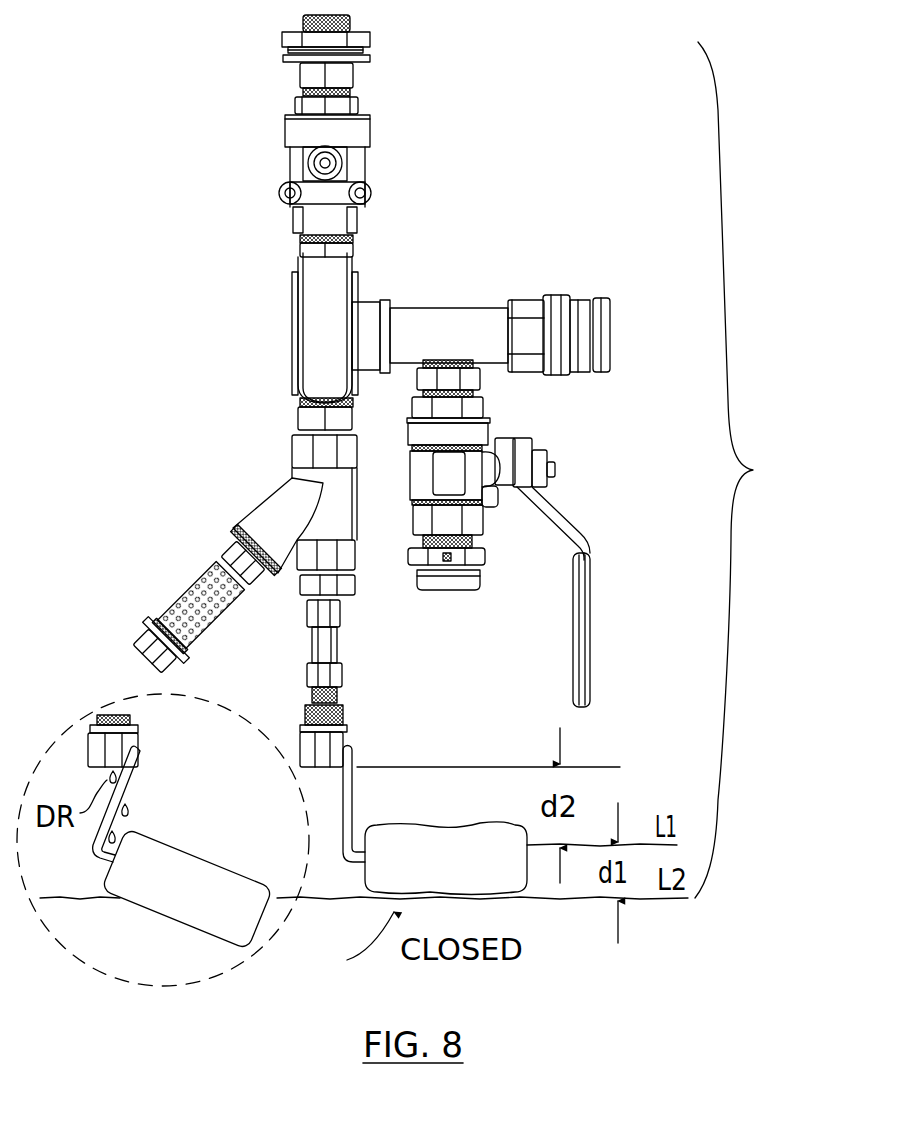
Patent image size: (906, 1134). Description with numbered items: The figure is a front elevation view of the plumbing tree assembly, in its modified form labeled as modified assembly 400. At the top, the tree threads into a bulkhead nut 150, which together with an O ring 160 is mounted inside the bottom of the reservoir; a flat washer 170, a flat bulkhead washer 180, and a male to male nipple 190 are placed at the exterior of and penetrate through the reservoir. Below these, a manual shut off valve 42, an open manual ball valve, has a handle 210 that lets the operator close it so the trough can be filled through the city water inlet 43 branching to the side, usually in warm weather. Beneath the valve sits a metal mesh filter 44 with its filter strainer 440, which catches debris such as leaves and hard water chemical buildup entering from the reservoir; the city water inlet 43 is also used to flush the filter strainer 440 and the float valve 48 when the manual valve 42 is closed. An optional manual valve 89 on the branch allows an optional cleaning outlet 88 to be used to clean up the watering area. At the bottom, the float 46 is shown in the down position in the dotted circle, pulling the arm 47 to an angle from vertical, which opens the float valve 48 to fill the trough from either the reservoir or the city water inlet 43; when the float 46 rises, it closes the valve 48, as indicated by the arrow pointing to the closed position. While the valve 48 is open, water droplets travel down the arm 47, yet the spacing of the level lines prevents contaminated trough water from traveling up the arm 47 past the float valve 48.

The bulkhead nut 150 is at (292, 40).
The O ring 160 is at (288, 50).
The flat washer 170 is at (360, 52).
The flat bulkhead washer 180 is at (366, 60).
The male to male nipple 190 is at (305, 78).
The manual shut off valve 42 is at (295, 135).
The handle 210 is at (318, 285).
The city water inlet 43 is at (548, 305).
The optional manual valve 89 is at (488, 433).
The optional cleaning outlet 88 is at (455, 583).
The filter 44 is at (290, 498).
The filter strainer 440 is at (205, 620).
The float valve 48 is at (340, 745).
The arm 47 is at (345, 795).
The float 46 is at (410, 848).
The modified assembly 400 is at (751, 470).